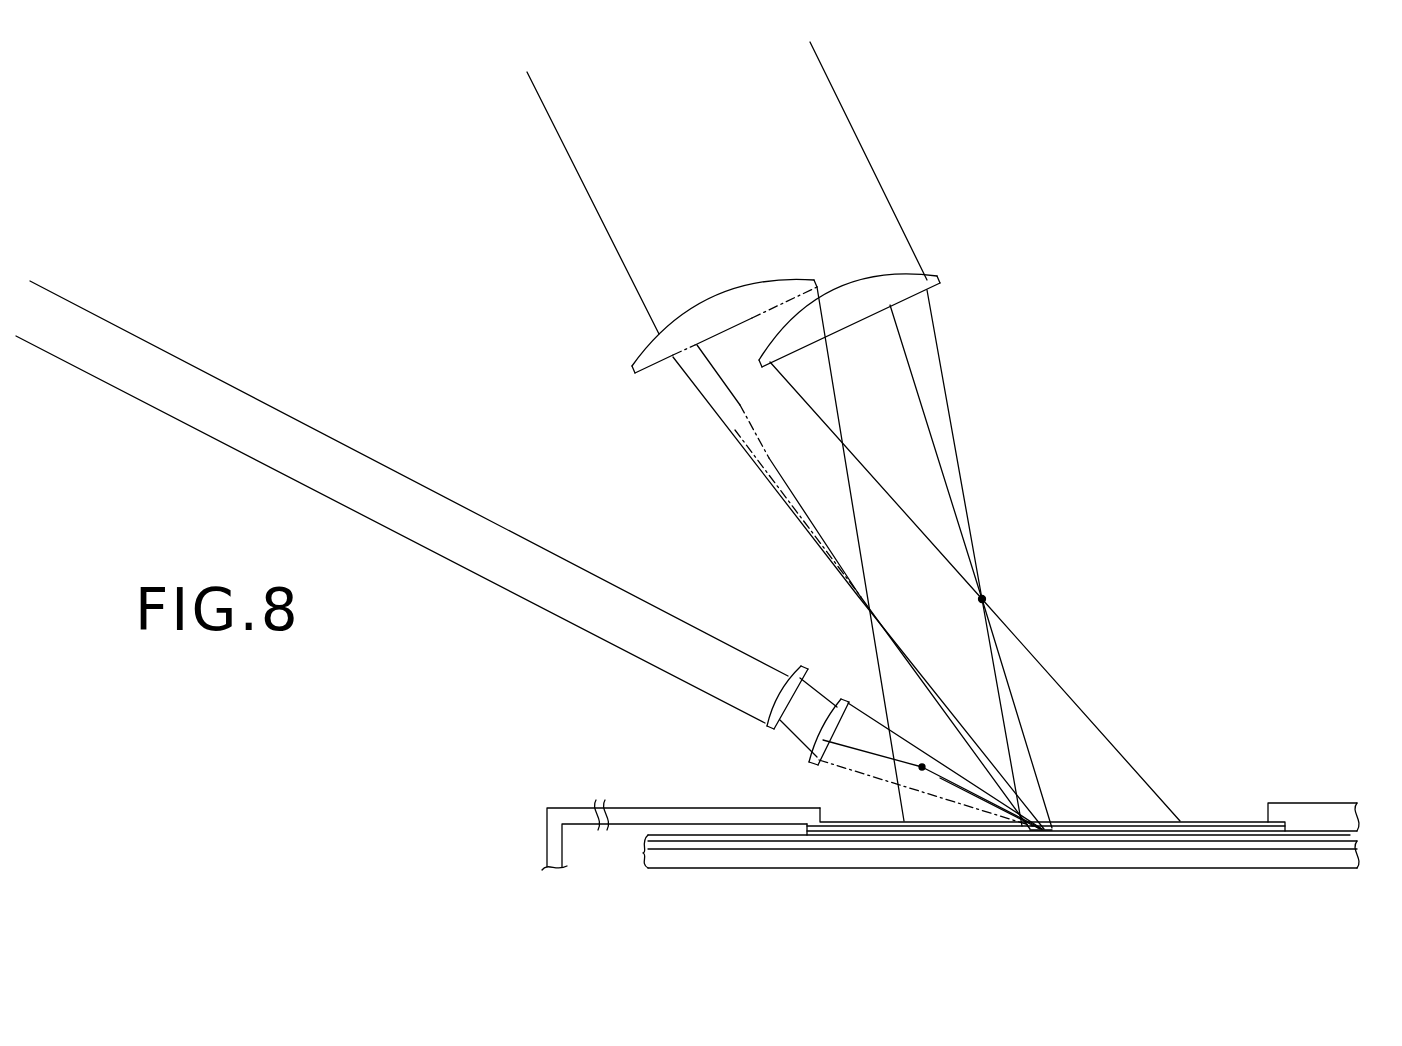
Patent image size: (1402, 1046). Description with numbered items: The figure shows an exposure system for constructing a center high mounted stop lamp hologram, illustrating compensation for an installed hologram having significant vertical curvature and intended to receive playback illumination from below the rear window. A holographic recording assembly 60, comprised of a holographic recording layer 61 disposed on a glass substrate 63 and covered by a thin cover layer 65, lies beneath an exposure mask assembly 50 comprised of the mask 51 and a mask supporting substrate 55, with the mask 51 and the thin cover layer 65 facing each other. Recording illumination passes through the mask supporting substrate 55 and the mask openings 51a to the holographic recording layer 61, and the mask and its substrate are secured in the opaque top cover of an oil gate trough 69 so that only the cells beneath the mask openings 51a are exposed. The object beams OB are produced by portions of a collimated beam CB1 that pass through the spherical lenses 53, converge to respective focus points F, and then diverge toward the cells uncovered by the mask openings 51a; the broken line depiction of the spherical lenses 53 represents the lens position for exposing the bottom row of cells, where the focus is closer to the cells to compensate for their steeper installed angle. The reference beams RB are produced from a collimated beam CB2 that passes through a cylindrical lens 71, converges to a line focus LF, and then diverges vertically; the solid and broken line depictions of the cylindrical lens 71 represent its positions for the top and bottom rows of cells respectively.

The exposure mask assembly 50 is at (1291, 825).
The mask 51 is at (1243, 830).
The mask openings 51a is at (1038, 833).
The spherical lenses 53 is at (797, 668).
The mask supporting substrate 55 is at (1197, 822).
The holographic recording assembly 60 is at (969, 843).
The holographic recording layer 61 is at (781, 846).
The glass substrate 63 is at (771, 860).
The thin cover layer 65 is at (720, 835).
The oil gate trough 69 is at (662, 779).
The cylindrical lens 71 is at (858, 298).
The collimated beam CB1 is at (191, 358).
The collimated beam CB2 is at (843, 108).
The line focus LF is at (988, 600).
The reference beams RB is at (1030, 742).
The focus points F is at (921, 764).
The object beams OB is at (968, 787).